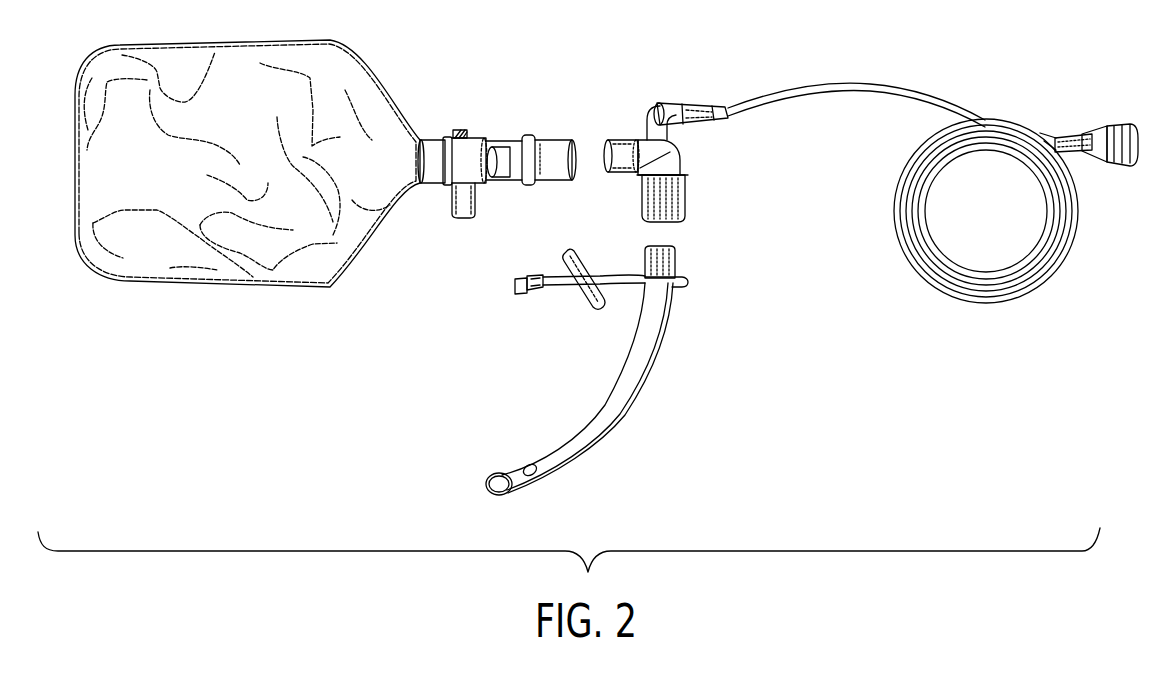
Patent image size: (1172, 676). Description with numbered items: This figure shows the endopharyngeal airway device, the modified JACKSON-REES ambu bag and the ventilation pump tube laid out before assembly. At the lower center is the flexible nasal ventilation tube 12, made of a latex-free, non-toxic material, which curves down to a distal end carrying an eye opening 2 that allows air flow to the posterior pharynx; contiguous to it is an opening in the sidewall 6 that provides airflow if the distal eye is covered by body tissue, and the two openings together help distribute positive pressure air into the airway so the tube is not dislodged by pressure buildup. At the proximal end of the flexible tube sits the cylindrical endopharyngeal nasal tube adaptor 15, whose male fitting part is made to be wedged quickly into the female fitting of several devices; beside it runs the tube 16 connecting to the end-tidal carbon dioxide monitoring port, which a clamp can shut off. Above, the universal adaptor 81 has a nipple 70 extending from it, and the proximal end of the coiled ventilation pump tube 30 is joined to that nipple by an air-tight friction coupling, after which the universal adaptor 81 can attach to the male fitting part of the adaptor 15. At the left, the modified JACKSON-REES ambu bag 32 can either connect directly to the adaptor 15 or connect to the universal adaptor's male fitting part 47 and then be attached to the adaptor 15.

The distal eye opening 2 is at (493, 477).
The opening in the sidewall 6 is at (532, 477).
The flexible nasal ventilation tube 12 is at (610, 427).
The endopharyngeal nasal tube adaptor 15 is at (673, 262).
The tube 16 is at (622, 284).
The ventilation pump tube 30 is at (846, 84).
The modified JACKSON-REES ambu bag 32 is at (167, 181).
The male fitting part 47 is at (626, 157).
The nipple 70 is at (700, 104).
The universal adaptor 81 is at (677, 155).